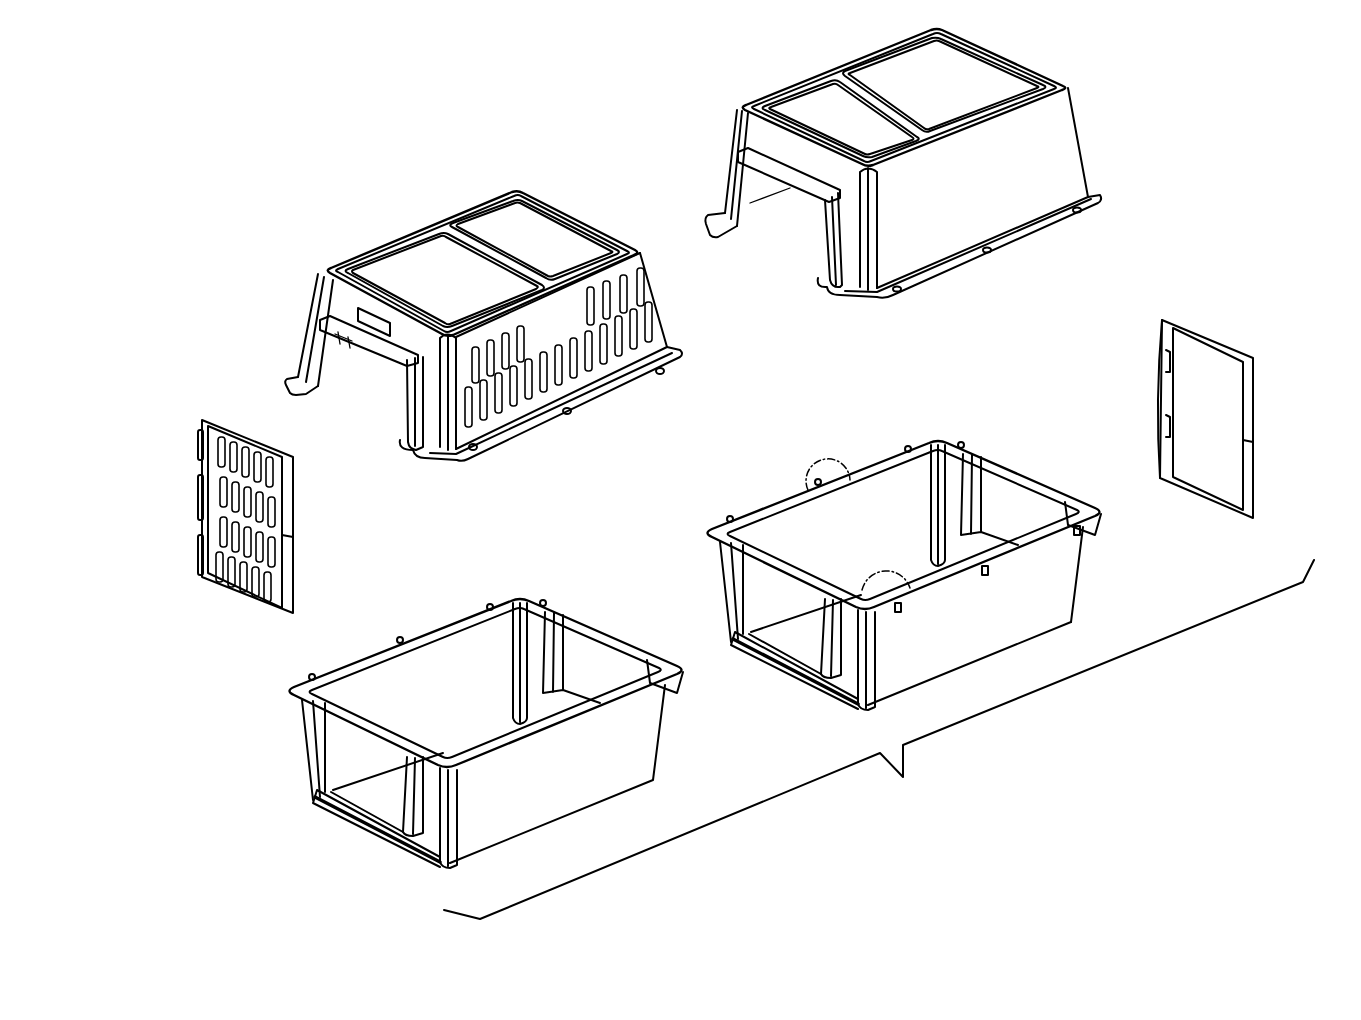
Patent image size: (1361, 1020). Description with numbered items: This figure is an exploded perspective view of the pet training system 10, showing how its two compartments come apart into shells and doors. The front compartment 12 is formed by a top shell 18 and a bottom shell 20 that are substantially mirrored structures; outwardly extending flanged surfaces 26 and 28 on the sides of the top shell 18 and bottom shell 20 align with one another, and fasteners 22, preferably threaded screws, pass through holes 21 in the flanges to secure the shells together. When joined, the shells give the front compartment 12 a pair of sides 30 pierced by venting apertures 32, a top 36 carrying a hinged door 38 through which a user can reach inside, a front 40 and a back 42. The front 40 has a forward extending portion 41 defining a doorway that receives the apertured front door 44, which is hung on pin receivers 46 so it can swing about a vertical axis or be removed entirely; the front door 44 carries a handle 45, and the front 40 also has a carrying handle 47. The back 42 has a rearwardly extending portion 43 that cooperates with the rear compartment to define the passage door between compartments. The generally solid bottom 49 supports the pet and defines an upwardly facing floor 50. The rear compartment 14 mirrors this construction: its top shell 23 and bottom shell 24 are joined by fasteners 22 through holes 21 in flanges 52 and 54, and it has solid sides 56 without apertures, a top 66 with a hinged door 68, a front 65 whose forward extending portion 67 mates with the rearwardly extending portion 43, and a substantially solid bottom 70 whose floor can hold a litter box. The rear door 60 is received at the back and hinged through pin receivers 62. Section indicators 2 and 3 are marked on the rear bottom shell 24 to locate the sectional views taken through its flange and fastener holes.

The pet training system 10 is at (190, 188).
The front compartment 12 is at (398, 192).
The rear compartment 14 is at (800, 40).
The top shell 18 is at (320, 297).
The bottom shell 20 is at (513, 820).
The holes 21 is at (823, 490).
The fasteners 22 is at (477, 448).
The top shell 23 is at (1062, 162).
The bottom shell 24 is at (1060, 580).
The flanged surface 26 is at (590, 405).
The flanged surface 28 is at (425, 638).
The sides 30 is at (628, 372).
The apertures 32 is at (640, 312).
The top 36 is at (437, 235).
The door 38 is at (385, 267).
The front 40 is at (305, 343).
The forward extending portion 41 is at (410, 393).
The back 42 is at (613, 237).
The rearwardly extending portion 43 is at (653, 262).
The front door 44 is at (188, 522).
The handle 45 is at (197, 478).
The pin receivers 46 is at (283, 455).
The carrying handle 47 is at (323, 282).
The bottom 49 is at (580, 815).
The floor 50 is at (492, 742).
The flange 52 is at (1038, 232).
The flange 54 is at (1100, 520).
The sides 56 is at (1033, 140).
The rear door 60 is at (1255, 425).
The pin receivers 62 is at (1235, 350).
The front 65 is at (745, 137).
The top 66 is at (800, 107).
The forward extending portion 67 is at (830, 230).
The door 68 is at (908, 62).
The bottom 70 is at (958, 668).
The section line 2 is at (795, 468).
The section line 3 is at (923, 595).